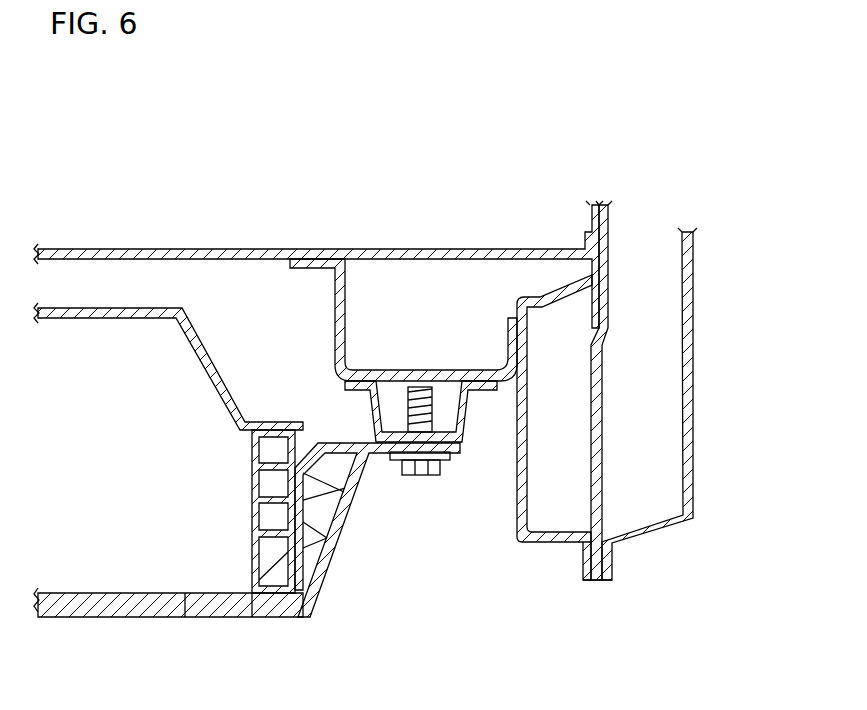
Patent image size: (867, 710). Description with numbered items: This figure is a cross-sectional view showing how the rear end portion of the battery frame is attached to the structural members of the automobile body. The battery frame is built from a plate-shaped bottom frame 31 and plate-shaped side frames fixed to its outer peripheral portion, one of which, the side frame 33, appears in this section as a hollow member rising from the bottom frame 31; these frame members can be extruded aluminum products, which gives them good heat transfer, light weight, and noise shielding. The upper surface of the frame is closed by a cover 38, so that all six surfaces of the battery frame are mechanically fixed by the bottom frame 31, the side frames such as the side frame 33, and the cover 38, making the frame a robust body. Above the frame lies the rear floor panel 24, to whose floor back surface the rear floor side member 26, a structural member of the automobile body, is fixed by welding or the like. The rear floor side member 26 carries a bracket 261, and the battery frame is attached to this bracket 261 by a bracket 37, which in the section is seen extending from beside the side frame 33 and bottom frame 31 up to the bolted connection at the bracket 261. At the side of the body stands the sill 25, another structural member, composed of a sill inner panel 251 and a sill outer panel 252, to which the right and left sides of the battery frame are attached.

The rear floor panel 24 is at (230, 249).
The sill 25 is at (700, 358).
The sill inner panel 251 is at (507, 542).
The sill outer panel 252 is at (697, 434).
The rear floor side member 26 is at (340, 320).
The bracket 261 is at (460, 444).
The cover 38 is at (105, 318).
The side frame 33 is at (252, 489).
The bracket 37 is at (343, 530).
The bottom frame 31 is at (160, 618).